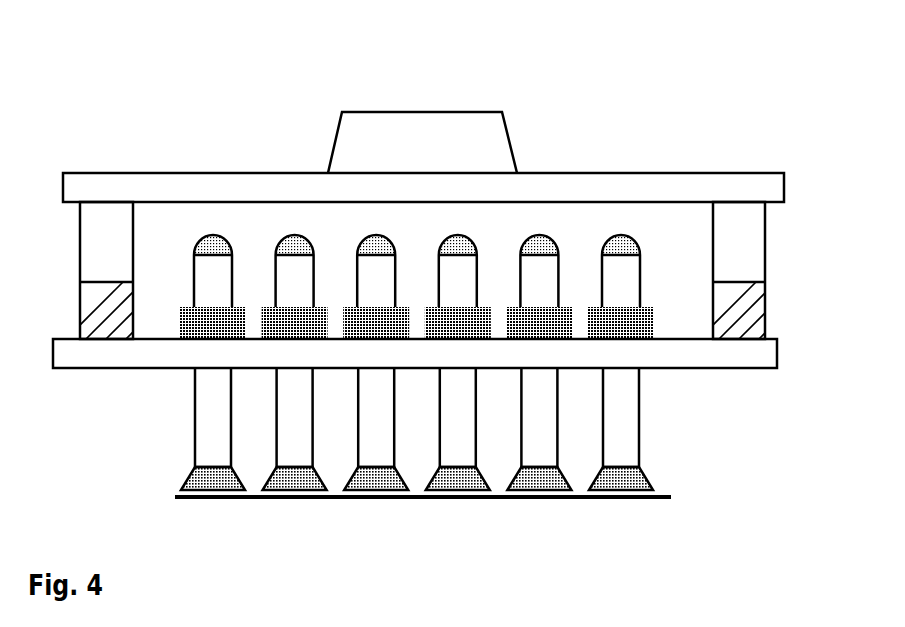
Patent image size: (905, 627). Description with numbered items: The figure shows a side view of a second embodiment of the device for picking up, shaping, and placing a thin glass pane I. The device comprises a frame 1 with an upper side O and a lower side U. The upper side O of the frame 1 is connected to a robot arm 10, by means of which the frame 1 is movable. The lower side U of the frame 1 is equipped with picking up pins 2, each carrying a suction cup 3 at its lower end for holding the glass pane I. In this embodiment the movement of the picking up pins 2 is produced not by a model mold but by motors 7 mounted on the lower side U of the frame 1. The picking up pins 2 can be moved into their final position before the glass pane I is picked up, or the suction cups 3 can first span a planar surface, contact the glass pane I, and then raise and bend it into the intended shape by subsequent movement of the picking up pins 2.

The frame 1 is at (123, 110).
The robot arm 10 is at (430, 133).
The picking up pin 2 is at (614, 280).
The motor 7 is at (642, 318).
The suction cup 3 is at (630, 475).
The upper side of the frame O is at (125, 180).
The lower side of the frame U is at (127, 353).
The thin glass pane I is at (640, 502).